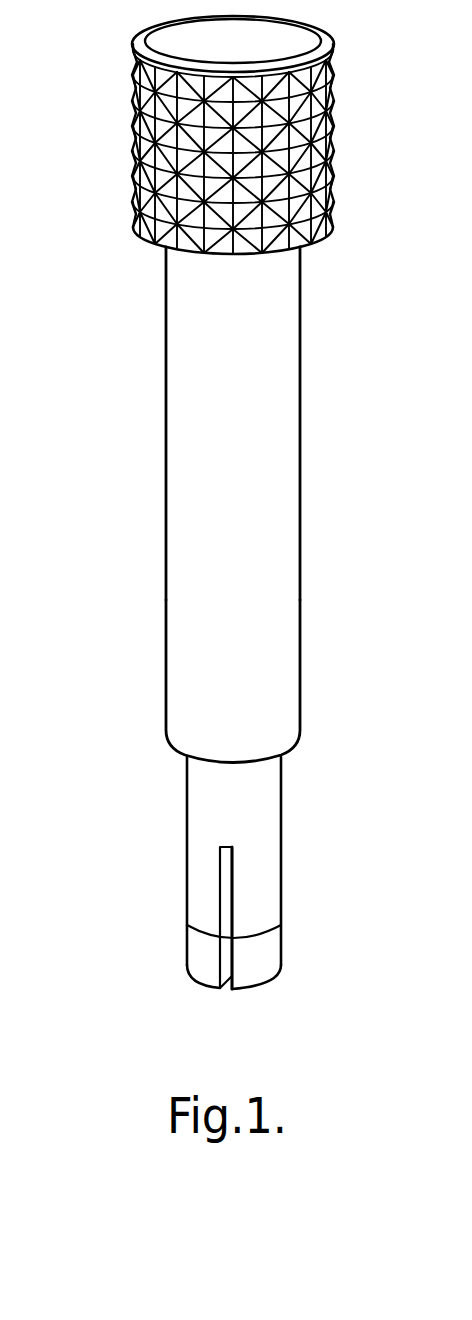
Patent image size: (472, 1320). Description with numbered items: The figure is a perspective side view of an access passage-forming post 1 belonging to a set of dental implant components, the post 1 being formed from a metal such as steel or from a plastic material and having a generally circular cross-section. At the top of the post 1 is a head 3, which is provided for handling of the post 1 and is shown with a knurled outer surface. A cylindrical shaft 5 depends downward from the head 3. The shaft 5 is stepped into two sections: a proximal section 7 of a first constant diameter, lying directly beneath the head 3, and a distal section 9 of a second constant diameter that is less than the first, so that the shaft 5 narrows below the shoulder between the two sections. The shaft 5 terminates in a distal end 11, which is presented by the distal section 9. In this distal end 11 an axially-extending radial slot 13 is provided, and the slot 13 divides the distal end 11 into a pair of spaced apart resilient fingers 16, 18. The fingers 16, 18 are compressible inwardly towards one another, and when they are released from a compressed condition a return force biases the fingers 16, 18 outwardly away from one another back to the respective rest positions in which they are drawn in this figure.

The access passage-forming post 1 is at (146, 433).
The head 3 is at (136, 117).
The cylindrical shaft 5 is at (300, 497).
The proximal section 7 is at (300, 660).
The distal section 9 is at (281, 862).
The distal end 11 is at (245, 986).
The axially-extending radial slot 13 is at (224, 884).
The resilient finger 16 is at (203, 989).
The resilient finger 18 is at (272, 989).